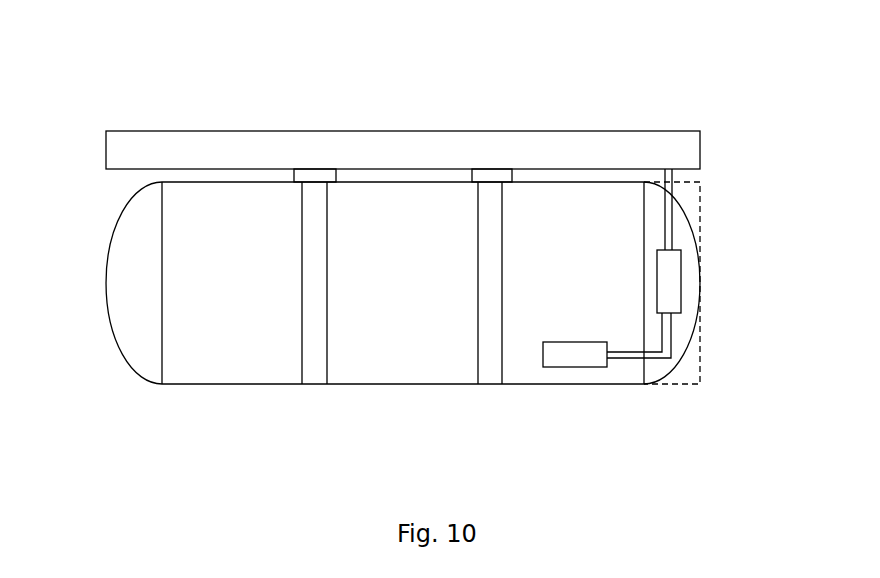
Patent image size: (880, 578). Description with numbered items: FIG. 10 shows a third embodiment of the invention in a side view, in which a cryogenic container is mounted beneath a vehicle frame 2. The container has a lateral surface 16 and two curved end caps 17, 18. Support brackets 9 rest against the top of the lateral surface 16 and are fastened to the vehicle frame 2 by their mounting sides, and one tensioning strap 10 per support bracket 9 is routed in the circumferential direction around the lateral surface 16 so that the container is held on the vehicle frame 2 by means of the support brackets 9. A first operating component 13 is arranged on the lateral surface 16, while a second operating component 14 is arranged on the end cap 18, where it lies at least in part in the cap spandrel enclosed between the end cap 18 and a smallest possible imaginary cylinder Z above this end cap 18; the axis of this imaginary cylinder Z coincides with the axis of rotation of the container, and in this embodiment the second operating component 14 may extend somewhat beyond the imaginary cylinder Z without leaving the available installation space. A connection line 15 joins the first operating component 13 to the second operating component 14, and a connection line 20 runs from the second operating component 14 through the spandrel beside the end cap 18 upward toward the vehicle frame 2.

The vehicle frame 2 is at (677, 130).
The support bracket 9 is at (315, 177).
The tensioning strap 10 is at (317, 372).
The first operating component 13 is at (572, 355).
The second operating component 14 is at (672, 287).
The connection line 15 is at (627, 352).
The lateral surface 16 is at (248, 368).
The end cap 17 is at (118, 288).
The end cap 18 is at (683, 238).
The connection line 20 is at (672, 192).
The imaginary cylinder Z is at (700, 377).